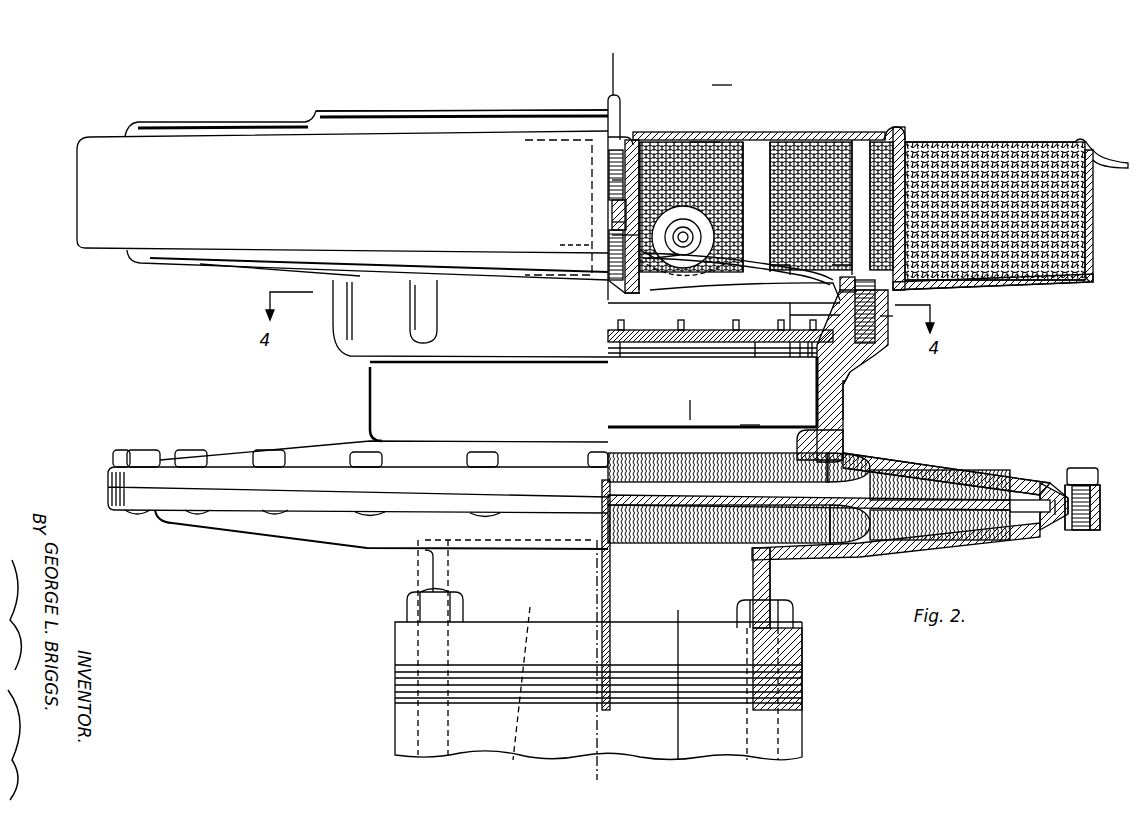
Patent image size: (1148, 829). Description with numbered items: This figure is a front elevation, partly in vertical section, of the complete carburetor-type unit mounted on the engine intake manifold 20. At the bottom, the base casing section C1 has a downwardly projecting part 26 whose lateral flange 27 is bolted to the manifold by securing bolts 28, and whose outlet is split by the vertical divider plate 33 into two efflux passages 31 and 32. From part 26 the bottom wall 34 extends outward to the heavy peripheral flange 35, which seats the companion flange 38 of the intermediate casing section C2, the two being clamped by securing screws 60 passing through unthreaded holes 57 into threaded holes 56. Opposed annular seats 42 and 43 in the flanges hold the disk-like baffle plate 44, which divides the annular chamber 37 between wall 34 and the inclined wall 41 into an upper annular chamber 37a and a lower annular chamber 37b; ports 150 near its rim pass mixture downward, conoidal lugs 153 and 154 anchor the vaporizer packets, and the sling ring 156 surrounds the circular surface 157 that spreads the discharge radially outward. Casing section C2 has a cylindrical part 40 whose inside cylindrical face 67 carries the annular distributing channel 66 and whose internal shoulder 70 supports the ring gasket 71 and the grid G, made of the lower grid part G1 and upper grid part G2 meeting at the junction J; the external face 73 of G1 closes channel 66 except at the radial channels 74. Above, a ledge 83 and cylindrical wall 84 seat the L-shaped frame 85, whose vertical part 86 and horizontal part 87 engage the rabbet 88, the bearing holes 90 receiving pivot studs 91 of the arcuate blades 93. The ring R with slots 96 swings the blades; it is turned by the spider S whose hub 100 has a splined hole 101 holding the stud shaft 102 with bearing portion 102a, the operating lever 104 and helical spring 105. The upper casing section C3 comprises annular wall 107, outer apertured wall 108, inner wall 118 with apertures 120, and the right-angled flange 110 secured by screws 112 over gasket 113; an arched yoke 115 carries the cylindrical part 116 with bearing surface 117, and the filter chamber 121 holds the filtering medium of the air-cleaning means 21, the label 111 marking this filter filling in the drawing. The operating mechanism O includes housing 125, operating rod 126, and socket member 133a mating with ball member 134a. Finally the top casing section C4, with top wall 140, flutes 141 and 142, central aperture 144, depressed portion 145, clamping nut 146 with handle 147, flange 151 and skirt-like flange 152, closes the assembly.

The skirt-like flange 152 is at (95, 217).
The top casing section C4 is at (278, 135).
The upper casing section C3 is at (208, 265).
The annular wall member 107 is at (245, 268).
The handle 147 is at (608, 112).
The intermediate casing section C2 is at (383, 405).
The disk-like top wall 140 is at (765, 155).
The intermediate annular flute 142 is at (893, 135).
The central aperture 144 is at (630, 150).
The central depressed portion 145 is at (652, 145).
The cylindrical part 116 is at (612, 160).
The clamping nut 146 is at (615, 172).
The arched yoke 115 is at (605, 185).
The internal bearing surface 117 is at (620, 205).
The bearing portion 102a is at (620, 222).
The helical spring 105 is at (615, 235).
The ball member 134a is at (560, 245).
The stud shaft 102 is at (615, 248).
The coaxial hole 101 is at (612, 290).
The hub-like member 100 is at (615, 305).
The air-outlet apertures 120 is at (722, 145).
The operating mechanism O is at (705, 145).
The socket member 133a is at (695, 130).
The inner annular wall 118 is at (860, 183).
The housing-like part 125 is at (712, 225).
The operating rod 126 is at (695, 237).
The spider S is at (735, 265).
The ring R is at (750, 305).
The operating lever 104 is at (660, 256).
The outer apertured wall 108 is at (1093, 220).
The filling 111 is at (960, 195).
The annular chamber 121 is at (1090, 192).
The annular flute 141 is at (1080, 140).
The flange 151 is at (1110, 163).
The air-cleaning means 21 is at (1088, 250).
The gasket 113 is at (900, 290).
The screws 112 is at (888, 316).
The interiorly cylindrical wall 84 is at (880, 335).
The vertical cylindrical part 86 is at (880, 320).
The ring-shaped frame 85 is at (865, 350).
The horizontal annular ledge 83 is at (860, 365).
The distributing channel 66 is at (843, 380).
The inside cylindrical face 67 is at (843, 395).
The cylindrical part 40 is at (843, 408).
The internal annular shoulder 70 is at (810, 430).
The slots 96 is at (735, 328).
The right-angled flange 110 is at (810, 300).
The arcuate blades 93 is at (668, 342).
The upper grid part G2 is at (612, 348).
The grid G is at (612, 353).
The lower grid part G1 is at (612, 357).
The radially-inwardly extending channels 74 is at (622, 357).
The external cylindrical face 73 is at (700, 427).
The junction J is at (690, 400).
The ring gasket 71 is at (745, 427).
The rabbet 88 is at (790, 352).
The horizontal annular part 87 is at (800, 352).
The pivot studs 91 is at (812, 355).
The bearing holes 90 is at (808, 357).
The sling ring 156 is at (760, 460).
The circular surface 157 is at (600, 468).
The conoidal lugs 154 is at (870, 553).
The conoidal lugs 153 is at (885, 465).
The baffle plate 44 is at (950, 470).
The inclined wall 41 is at (965, 480).
The upper annular chamber 37a is at (1030, 490).
The lower annular chamber 37b is at (1025, 530).
The internal annular chamber 37 is at (1040, 528).
The annular seat 42 is at (1063, 520).
The ports 150 is at (1030, 500).
The annular seat 43 is at (1055, 485).
The bottom wall 34 is at (980, 540).
The securing screws 60 is at (1085, 470).
The unthreaded holes 57 is at (1098, 508).
The threaded holes 56 is at (1098, 528).
The companion flange 38 is at (1100, 490).
The peripheral flange 35 is at (1075, 530).
The bottom casing section C1 is at (432, 570).
The divider plate 33 is at (610, 570).
The downwardly projecting part 26 is at (772, 585).
The securing bolts 28 is at (793, 612).
The peripheral flange 27 is at (802, 650).
The intake manifold 20 is at (790, 732).
The efflux passage 32 is at (516, 694).
The efflux passage 31 is at (678, 696).